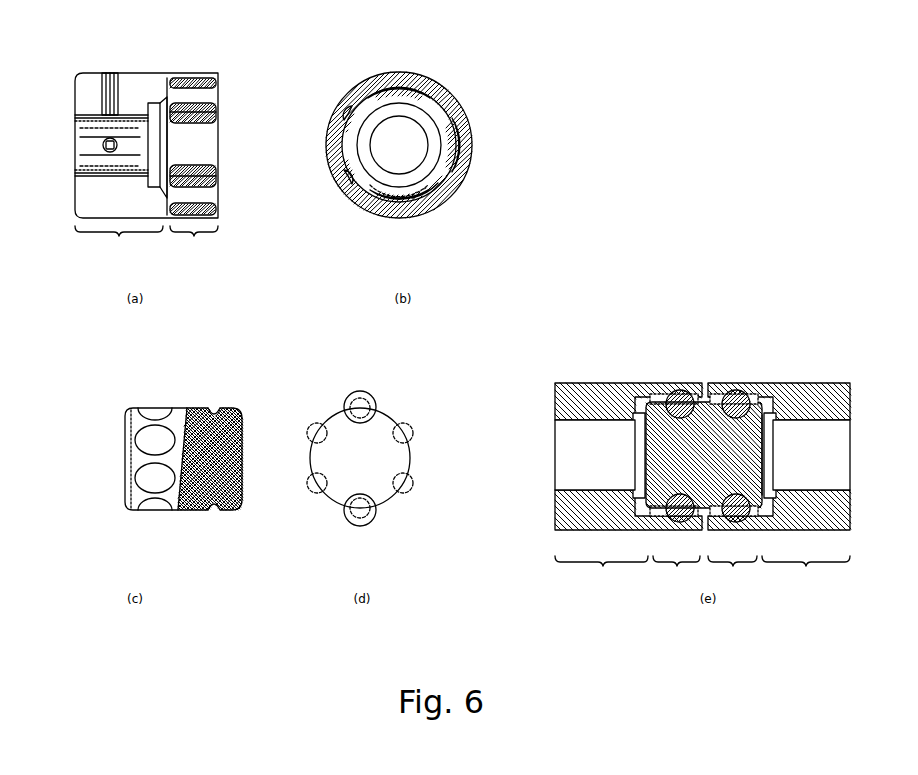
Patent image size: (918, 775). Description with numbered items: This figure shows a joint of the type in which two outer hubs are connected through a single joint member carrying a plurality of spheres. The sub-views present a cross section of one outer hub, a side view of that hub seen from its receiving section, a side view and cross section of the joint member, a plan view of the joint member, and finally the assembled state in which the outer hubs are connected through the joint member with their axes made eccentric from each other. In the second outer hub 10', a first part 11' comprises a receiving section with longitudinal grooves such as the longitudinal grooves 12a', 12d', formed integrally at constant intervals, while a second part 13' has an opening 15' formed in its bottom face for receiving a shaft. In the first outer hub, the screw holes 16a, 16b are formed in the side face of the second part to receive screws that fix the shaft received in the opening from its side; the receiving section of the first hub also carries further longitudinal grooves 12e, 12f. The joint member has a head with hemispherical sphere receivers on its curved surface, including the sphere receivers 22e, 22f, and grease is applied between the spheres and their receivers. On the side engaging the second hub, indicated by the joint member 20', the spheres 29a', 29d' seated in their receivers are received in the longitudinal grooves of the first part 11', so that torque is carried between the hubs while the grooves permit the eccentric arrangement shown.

The outer hub 10' is at (781, 433).
The first part 11' is at (732, 570).
The longitudinal groove 12a' is at (751, 384).
The longitudinal groove 12d' is at (746, 530).
The longitudinal groove 12e is at (340, 174).
The longitudinal groove 12f is at (346, 104).
The second part 13' is at (806, 570).
The opening 15' is at (811, 455).
The screw hole 16a is at (112, 76).
The screw hole 16b is at (103, 145).
The joint member 20' is at (791, 485).
The sphere receiver 22e is at (320, 484).
The sphere receiver 22f is at (318, 430).
The sphere 29a' is at (735, 386).
The sphere 29d' is at (733, 524).